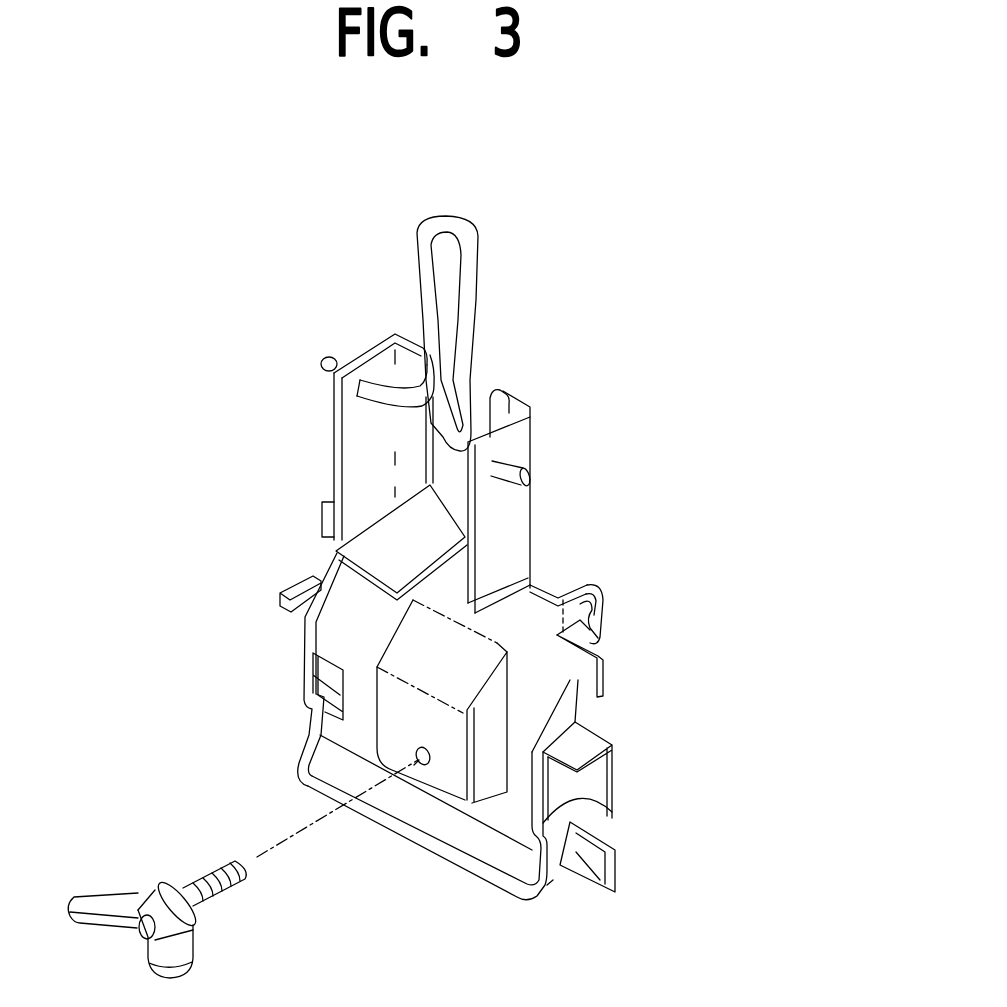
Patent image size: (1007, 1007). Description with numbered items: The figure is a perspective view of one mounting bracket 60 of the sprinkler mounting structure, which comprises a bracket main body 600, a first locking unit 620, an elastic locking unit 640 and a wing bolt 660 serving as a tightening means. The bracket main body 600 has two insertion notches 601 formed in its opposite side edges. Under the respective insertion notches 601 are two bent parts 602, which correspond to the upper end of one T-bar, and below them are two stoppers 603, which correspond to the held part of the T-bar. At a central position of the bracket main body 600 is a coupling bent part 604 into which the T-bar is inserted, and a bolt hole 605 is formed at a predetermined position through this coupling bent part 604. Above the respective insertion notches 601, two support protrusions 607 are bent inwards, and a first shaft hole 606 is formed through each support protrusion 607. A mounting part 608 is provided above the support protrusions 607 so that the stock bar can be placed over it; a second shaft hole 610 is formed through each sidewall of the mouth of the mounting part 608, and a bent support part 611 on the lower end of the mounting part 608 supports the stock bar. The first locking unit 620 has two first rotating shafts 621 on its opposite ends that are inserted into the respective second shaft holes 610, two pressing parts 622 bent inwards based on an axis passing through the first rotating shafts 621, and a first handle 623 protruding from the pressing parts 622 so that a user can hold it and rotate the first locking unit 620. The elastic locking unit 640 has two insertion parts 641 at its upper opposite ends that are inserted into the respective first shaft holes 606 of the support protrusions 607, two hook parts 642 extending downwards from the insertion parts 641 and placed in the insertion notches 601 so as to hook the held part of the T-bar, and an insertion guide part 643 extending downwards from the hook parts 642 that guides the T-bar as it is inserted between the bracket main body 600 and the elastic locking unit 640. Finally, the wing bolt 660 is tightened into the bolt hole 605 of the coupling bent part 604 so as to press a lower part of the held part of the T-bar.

The mounting bracket 60 is at (298, 415).
The bracket main body 600 is at (540, 660).
The insertion notches 601 is at (593, 713).
The bent parts 602 is at (580, 748).
The stoppers 603 is at (610, 873).
The coupling bent part 604 is at (393, 725).
The bolt hole 605 is at (420, 762).
The first shaft hole 606 is at (593, 610).
The support protrusions 607 is at (590, 583).
The mounting part 608 is at (477, 438).
The second shaft hole 610 is at (361, 380).
The bent support part 611 is at (427, 530).
The first locking unit 620 is at (475, 232).
The first rotating shafts 621 is at (321, 357).
The pressing parts 622 is at (403, 407).
The first handle 623 is at (430, 227).
The elastic locking unit 640 is at (473, 877).
The insertion parts 641 is at (560, 587).
The hook parts 642 is at (615, 808).
The insertion guide part 643 is at (557, 878).
The wing bolt 660 is at (115, 912).